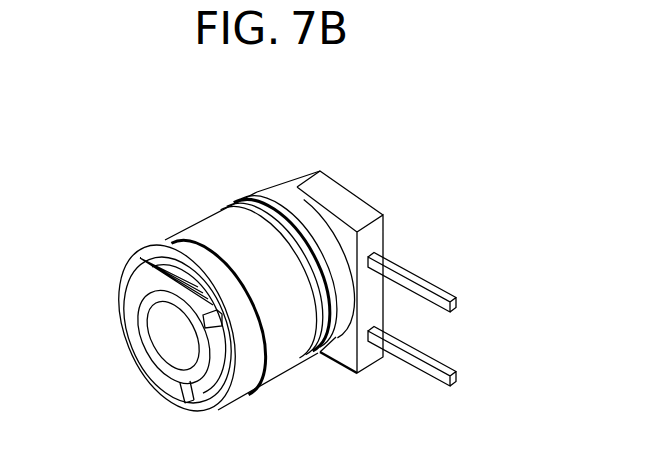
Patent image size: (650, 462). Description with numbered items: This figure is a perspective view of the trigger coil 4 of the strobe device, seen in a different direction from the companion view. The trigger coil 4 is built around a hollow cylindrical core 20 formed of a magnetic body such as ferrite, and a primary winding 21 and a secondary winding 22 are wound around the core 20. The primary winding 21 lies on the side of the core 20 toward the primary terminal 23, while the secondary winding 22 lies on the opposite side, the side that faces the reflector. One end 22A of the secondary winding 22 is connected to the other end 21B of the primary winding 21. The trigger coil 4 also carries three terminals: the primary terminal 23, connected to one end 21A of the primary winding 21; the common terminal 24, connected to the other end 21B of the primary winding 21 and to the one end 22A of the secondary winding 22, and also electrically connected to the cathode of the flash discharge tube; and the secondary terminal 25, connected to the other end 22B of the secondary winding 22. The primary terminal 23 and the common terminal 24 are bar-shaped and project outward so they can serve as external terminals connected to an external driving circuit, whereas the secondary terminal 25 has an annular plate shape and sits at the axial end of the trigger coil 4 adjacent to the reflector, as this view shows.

The trigger coil 4 is at (74, 105).
The hollow cylindrical core 20 is at (160, 338).
The primary winding 21 is at (272, 200).
The one end of primary winding 21A is at (298, 198).
The other end of primary winding 21B is at (298, 225).
The secondary winding 22 is at (215, 243).
The one end of secondary winding 22A is at (242, 207).
The other end of secondary winding 22B is at (167, 242).
The primary terminal 23 is at (458, 305).
The common terminal 24 is at (458, 380).
The secondary terminal 25 is at (205, 395).